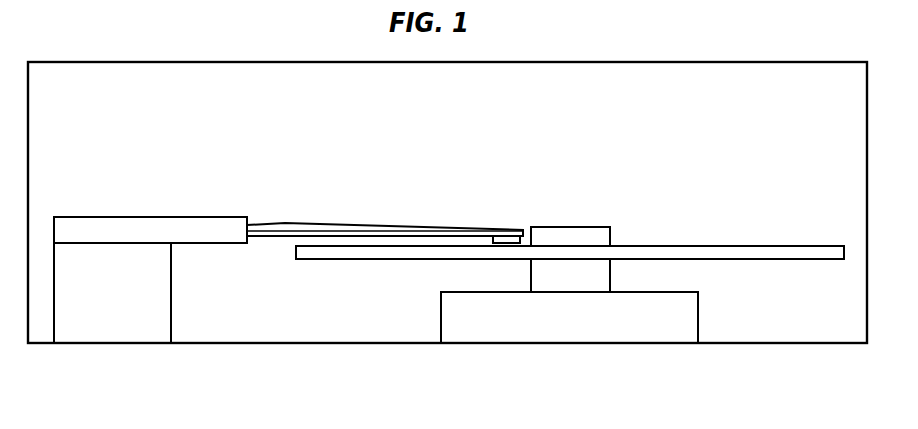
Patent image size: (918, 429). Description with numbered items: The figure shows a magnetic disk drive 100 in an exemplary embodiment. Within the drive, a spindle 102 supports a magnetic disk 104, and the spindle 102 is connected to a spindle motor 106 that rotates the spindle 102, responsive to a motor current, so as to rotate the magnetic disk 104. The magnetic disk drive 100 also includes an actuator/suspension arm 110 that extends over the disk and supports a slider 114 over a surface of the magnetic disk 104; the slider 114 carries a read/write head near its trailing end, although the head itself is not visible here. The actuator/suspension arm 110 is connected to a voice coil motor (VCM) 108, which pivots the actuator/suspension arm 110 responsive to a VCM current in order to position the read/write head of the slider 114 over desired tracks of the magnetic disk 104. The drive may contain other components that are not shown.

The magnetic disk drive 100 is at (135, 124).
The spindle 102 is at (591, 226).
The magnetic disk 104 is at (752, 245).
The spindle motor 106 is at (699, 315).
The voice coil motor (VCM) 108 is at (96, 313).
The actuator/suspension arm 110 is at (288, 233).
The slider 114 is at (510, 240).